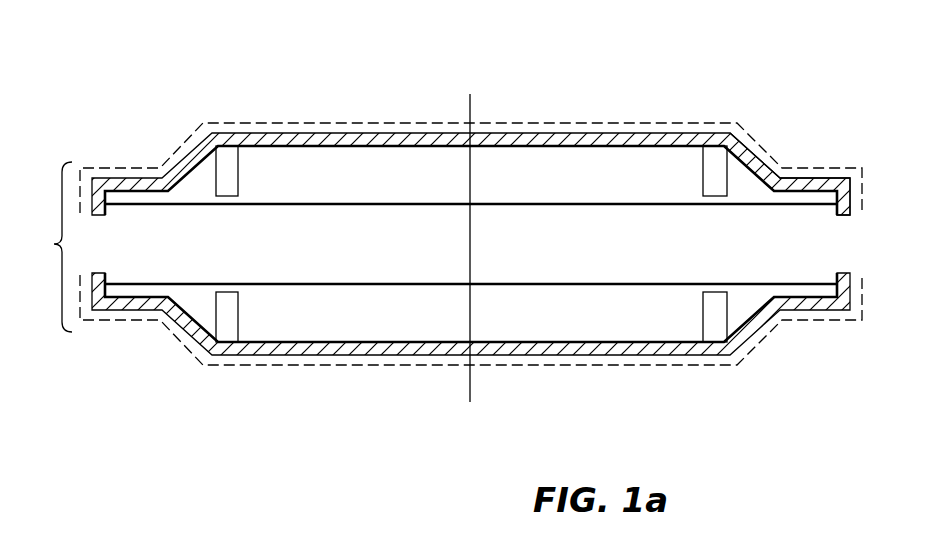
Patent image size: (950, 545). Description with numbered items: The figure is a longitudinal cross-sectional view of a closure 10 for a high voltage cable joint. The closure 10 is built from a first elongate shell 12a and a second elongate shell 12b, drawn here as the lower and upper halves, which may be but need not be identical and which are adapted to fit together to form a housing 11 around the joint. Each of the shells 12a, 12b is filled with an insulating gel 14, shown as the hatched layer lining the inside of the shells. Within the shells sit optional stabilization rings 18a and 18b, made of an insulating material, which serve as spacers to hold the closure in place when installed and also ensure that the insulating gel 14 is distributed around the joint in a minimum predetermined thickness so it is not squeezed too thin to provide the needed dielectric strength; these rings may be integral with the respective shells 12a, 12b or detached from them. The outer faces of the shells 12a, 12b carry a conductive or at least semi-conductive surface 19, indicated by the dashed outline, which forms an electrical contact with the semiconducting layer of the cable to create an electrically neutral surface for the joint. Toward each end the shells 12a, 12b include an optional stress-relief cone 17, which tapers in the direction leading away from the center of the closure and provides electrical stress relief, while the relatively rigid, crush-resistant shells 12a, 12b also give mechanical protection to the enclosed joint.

The closure 10 is at (166, 37).
The housing 11 is at (44, 247).
The first elongate shell 12a is at (274, 364).
The second elongate shell 12b is at (320, 126).
The insulating gel 14 is at (423, 153).
The stress-relief cone 17 is at (772, 162).
The stabilization ring 18a is at (733, 143).
The stabilization ring 18b is at (733, 338).
The conductive surface 19 is at (612, 122).